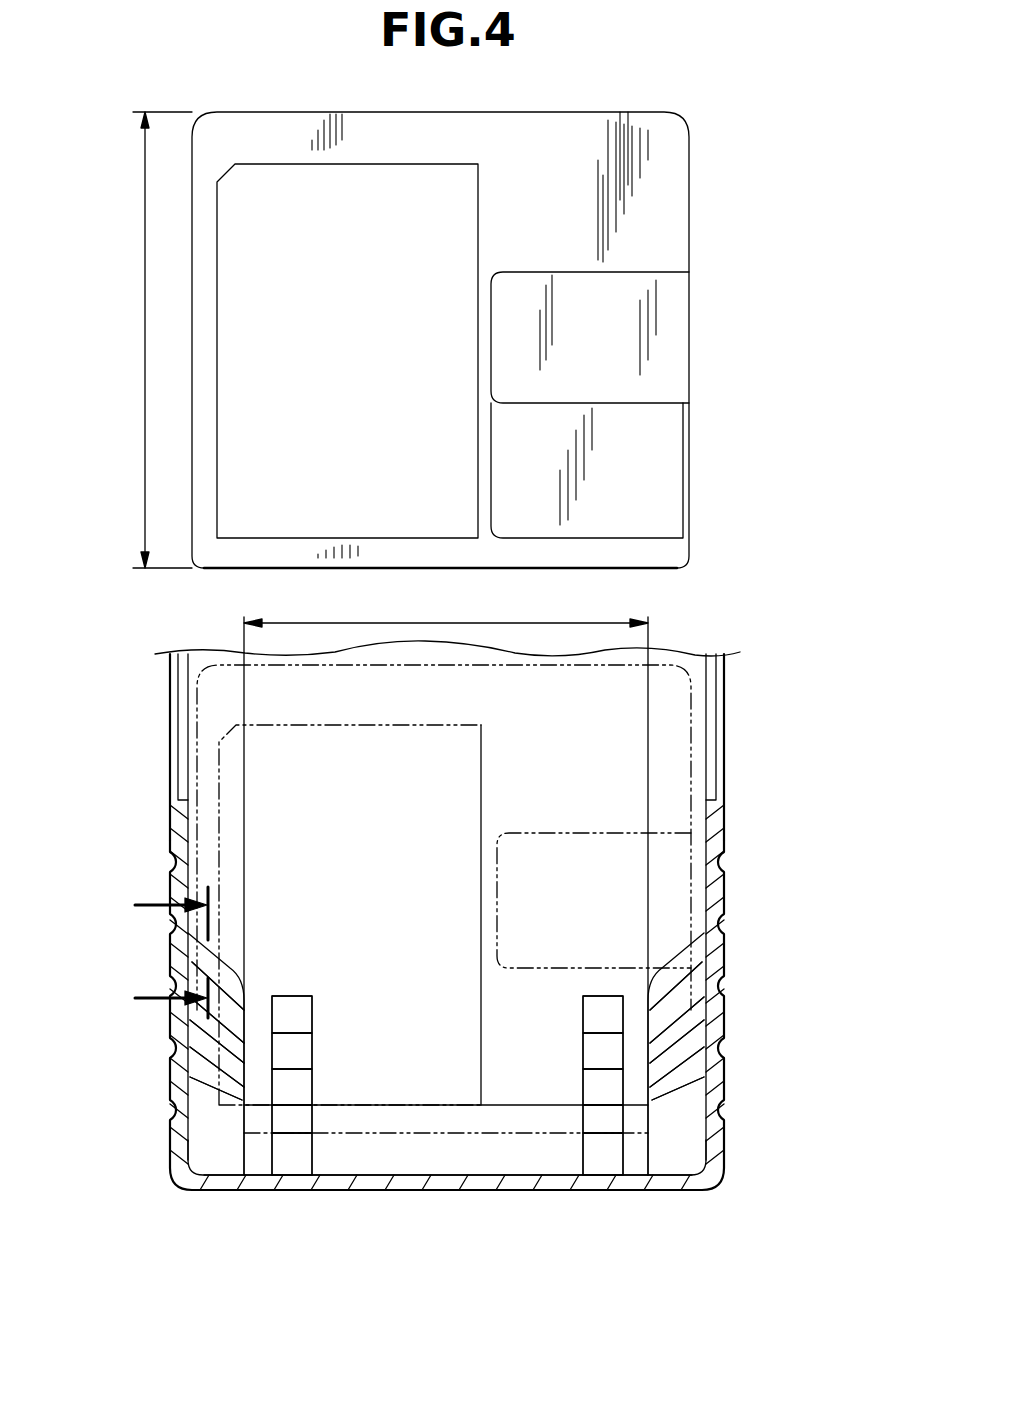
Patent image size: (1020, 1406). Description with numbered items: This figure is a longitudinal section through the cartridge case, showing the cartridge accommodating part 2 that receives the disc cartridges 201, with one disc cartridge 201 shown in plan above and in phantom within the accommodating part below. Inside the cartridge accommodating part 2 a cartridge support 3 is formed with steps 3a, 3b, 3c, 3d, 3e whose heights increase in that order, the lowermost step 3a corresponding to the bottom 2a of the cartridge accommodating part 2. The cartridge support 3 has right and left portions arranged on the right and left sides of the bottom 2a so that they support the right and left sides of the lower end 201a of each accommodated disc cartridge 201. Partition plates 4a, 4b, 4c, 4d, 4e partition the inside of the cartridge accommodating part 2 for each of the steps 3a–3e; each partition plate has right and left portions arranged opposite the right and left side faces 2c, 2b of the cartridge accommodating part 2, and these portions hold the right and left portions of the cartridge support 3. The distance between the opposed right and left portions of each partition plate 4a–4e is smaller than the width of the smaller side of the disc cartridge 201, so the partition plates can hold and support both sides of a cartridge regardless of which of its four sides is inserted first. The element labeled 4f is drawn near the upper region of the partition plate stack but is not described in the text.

The disc cartridge 201 is at (692, 222).
The lower end of disc cartridge 201a is at (641, 570).
The cartridge accommodating part 2 is at (222, 1190).
The bottom of cartridge accommodating part 2a is at (357, 1183).
The left side face of cartridge accommodating part 2b is at (190, 1152).
The right side face of cartridge accommodating part 2c is at (722, 1140).
The cartridge support 3 is at (455, 858).
The step 3a is at (308, 1160).
The step 3b is at (312, 1120).
The step 3c is at (313, 1075).
The step 3d is at (298, 1045).
The step 3e is at (278, 1012).
The partition plate 4a is at (195, 1098).
The partition plate 4b is at (190, 1060).
The partition plate 4c is at (190, 1030).
The partition plate 4d is at (190, 967).
The partition plate 4e is at (190, 945).
The flange of sleeve 4f is at (238, 995).